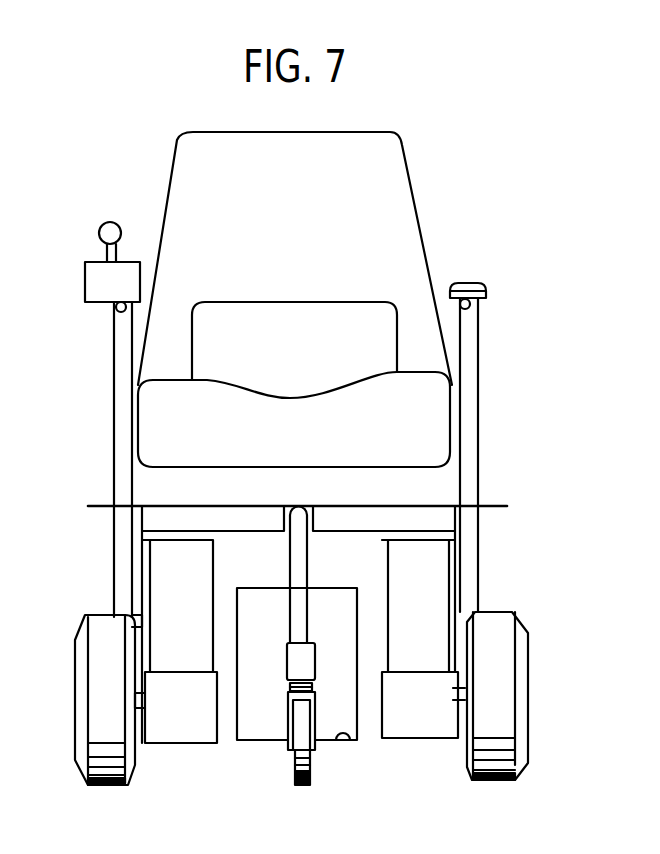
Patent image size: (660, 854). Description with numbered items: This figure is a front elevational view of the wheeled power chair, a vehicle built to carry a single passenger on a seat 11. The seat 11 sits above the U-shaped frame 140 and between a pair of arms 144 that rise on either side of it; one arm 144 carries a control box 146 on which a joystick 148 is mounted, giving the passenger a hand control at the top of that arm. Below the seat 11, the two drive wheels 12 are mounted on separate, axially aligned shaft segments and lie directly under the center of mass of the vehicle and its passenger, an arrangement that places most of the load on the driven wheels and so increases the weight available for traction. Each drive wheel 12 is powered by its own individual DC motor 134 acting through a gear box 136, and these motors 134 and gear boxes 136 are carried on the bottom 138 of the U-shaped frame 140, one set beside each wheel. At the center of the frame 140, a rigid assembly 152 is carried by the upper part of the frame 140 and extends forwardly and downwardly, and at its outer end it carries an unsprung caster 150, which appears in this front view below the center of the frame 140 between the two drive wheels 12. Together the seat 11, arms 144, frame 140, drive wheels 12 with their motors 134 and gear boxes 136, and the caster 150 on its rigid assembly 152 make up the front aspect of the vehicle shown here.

The seat 11 is at (410, 386).
The drive wheels 12 is at (105, 785).
The DC motors 134 is at (195, 570).
The gear boxes 136 is at (178, 727).
The bottom 138 is at (343, 742).
The U-shaped frame 140 is at (263, 728).
The arms 144 is at (114, 313).
The control box 146 is at (93, 263).
The joystick 148 is at (110, 222).
The unsprung caster 150 is at (303, 787).
The rigid assembly 152 is at (297, 612).